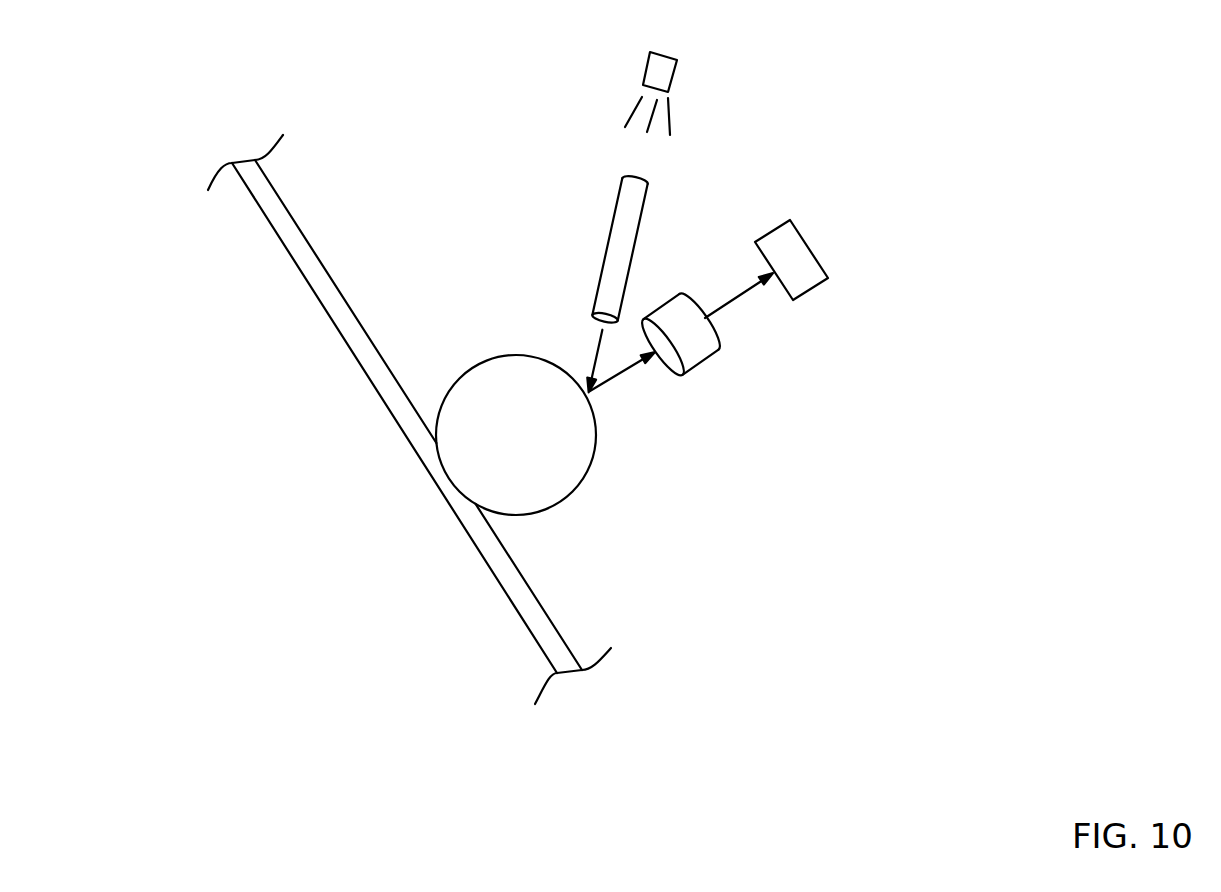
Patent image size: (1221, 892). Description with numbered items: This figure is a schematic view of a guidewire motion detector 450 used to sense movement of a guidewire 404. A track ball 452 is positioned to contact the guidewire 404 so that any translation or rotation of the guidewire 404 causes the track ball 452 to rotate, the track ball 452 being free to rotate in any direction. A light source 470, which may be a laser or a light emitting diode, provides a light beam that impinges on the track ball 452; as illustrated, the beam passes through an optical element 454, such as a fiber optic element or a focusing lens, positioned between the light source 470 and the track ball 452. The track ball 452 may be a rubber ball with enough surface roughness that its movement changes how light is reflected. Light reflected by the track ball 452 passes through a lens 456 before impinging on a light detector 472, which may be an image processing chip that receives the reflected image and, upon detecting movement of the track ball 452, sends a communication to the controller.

The guidewire 404 is at (315, 293).
The guidewire motion detector 450 is at (834, 128).
The track ball 452 is at (573, 472).
The optical element 454 is at (608, 249).
The lens 456 is at (698, 353).
The light source 470 is at (663, 63).
The light detector 472 is at (815, 280).